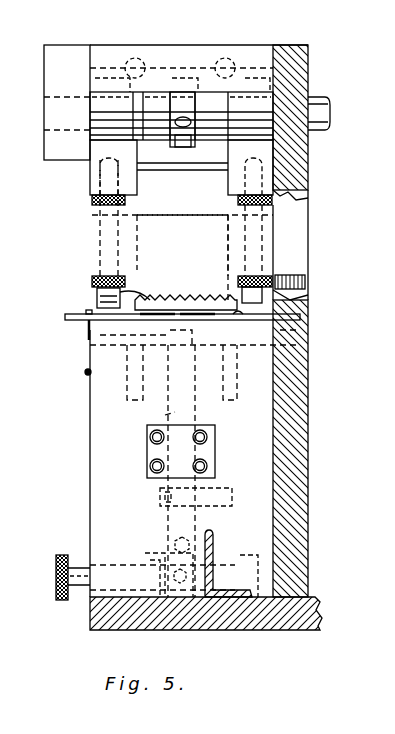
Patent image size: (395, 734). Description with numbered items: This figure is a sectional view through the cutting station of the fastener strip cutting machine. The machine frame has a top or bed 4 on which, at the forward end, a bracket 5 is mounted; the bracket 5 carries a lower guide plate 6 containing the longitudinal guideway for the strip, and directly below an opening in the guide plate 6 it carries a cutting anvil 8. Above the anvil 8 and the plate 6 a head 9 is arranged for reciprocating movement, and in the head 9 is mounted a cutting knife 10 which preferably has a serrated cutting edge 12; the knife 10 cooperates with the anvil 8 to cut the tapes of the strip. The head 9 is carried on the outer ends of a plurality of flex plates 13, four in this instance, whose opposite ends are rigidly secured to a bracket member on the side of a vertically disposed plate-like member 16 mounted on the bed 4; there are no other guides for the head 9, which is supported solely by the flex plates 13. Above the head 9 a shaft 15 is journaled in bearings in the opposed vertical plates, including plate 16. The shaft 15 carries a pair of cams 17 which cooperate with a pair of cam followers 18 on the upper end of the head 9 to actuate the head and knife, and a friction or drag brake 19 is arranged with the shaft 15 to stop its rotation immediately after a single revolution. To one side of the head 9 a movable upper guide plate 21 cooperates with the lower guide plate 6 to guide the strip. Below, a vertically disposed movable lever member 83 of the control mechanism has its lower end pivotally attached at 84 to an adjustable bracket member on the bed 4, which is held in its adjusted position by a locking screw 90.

The bed 4 is at (298, 620).
The bracket 5 is at (98, 500).
The lower guide plate 6 is at (158, 323).
The cutting anvil 8 is at (130, 358).
The head 9 is at (192, 248).
The cutting knife 10 is at (150, 252).
The serrated cutting edge 12 is at (97, 297).
The flex plates 13 is at (92, 280).
The shaft 15 is at (318, 104).
The plate-like member 16 is at (298, 390).
The cams 17 is at (107, 102).
The cam followers 18 is at (104, 148).
The friction or drag brake 19 is at (184, 102).
The movable upper guide plate 21 is at (103, 320).
The lever member 83 is at (165, 417).
The pivot 84 is at (232, 498).
The locking screw 90 is at (58, 584).